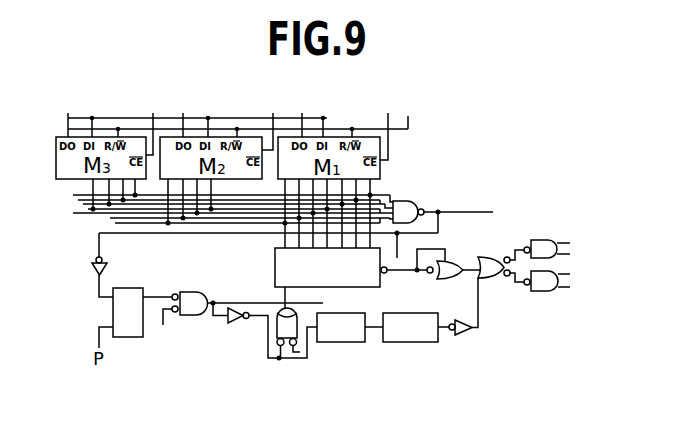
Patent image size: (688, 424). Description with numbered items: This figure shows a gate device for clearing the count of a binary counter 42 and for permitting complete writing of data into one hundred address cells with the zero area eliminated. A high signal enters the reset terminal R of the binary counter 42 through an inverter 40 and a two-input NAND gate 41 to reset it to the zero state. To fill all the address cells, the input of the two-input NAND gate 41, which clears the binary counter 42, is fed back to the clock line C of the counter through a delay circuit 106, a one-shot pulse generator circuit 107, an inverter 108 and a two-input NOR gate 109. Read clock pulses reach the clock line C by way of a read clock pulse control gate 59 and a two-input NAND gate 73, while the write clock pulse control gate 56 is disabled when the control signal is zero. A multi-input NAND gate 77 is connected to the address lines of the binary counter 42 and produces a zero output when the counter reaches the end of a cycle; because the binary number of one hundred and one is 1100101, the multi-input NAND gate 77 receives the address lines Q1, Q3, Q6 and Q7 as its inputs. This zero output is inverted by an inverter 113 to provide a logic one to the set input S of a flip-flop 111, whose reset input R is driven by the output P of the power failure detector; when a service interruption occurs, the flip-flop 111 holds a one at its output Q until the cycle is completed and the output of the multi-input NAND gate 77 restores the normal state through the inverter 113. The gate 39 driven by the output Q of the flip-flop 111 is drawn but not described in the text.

The multi-input NAND gate 77 is at (443, 201).
The binary counter 42 is at (331, 267).
The 2-input NOR gate 109 is at (446, 281).
The 2-input NAND gate 73 is at (491, 257).
The write clock pulse control gate 56 is at (547, 238).
The read clock pulse control gate 59 is at (547, 291).
The inverter 113 is at (86, 254).
The flip-flop 111 is at (113, 312).
The AND gate 39 is at (190, 292).
The inverter 40 is at (235, 327).
The 2-input NAND gate 41 is at (285, 306).
The delay circuit 106 is at (341, 327).
The one-shot pulse generator circuit 107 is at (410, 327).
The inverter 108 is at (468, 338).